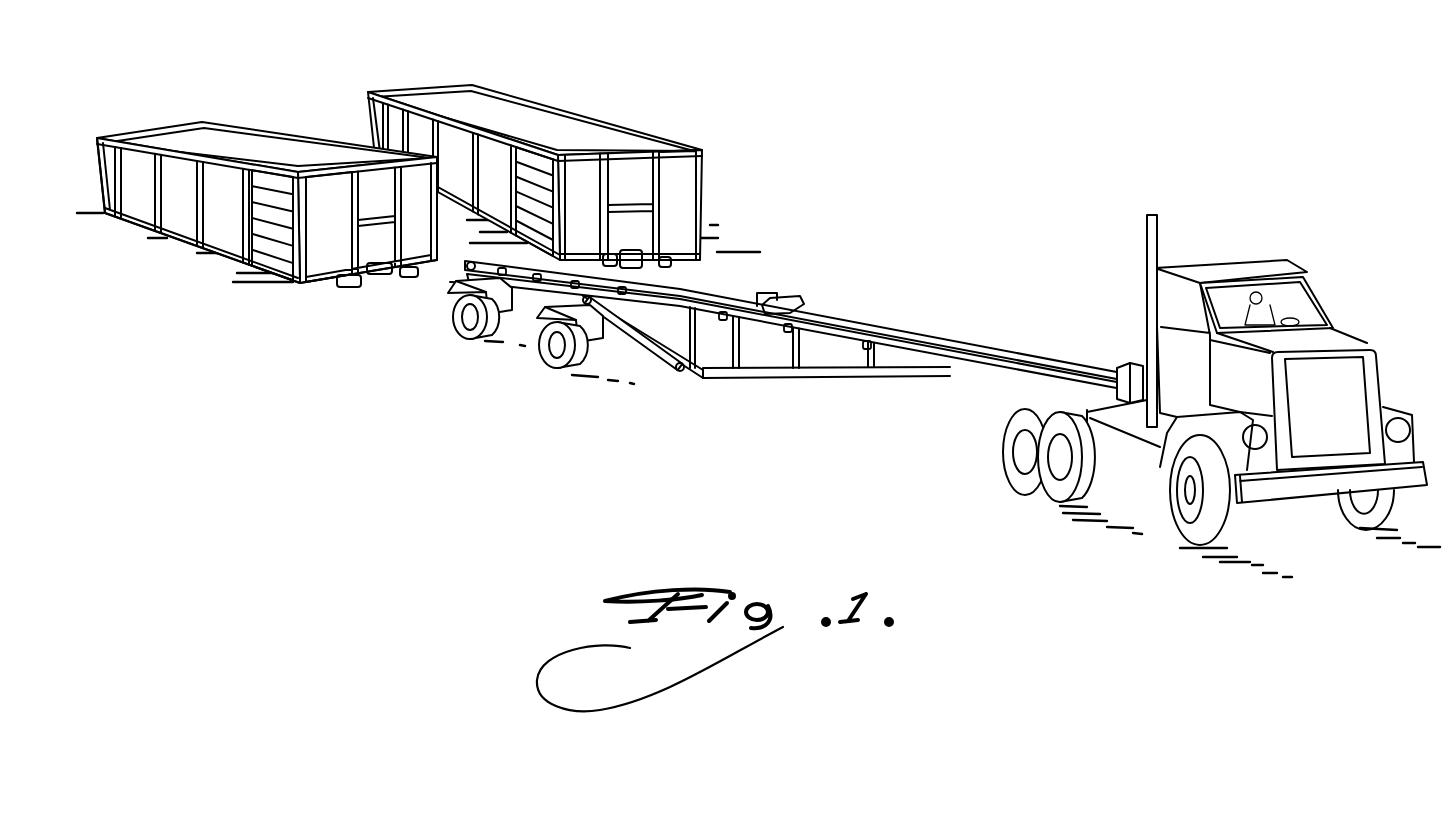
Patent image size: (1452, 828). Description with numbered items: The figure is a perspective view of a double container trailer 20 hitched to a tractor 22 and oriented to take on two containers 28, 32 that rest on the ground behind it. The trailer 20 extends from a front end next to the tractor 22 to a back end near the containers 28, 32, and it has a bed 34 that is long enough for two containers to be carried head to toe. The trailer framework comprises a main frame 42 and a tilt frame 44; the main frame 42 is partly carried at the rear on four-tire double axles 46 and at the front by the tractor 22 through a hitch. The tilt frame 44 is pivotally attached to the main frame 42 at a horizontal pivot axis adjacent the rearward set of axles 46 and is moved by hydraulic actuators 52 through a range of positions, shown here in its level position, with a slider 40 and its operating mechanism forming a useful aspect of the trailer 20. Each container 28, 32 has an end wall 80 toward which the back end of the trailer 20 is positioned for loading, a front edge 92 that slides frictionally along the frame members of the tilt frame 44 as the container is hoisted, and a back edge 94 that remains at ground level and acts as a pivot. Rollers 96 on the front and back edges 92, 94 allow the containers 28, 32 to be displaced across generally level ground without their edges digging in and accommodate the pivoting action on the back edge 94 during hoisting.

The double container trailer 20 is at (1006, 316).
The tractor 22 is at (1273, 237).
The container 28 is at (248, 115).
The container 32 is at (528, 93).
The bed 34 is at (910, 323).
The slider 40 is at (792, 303).
The main frame 42 is at (836, 374).
The tilt frame 44 is at (662, 286).
The four-tire double axles 46 is at (487, 336).
The hydraulic actuators 52 is at (641, 342).
The end wall 80 is at (332, 182).
The front edge 92 is at (317, 284).
The back edge 94 is at (106, 214).
The rollers 96 is at (360, 289).